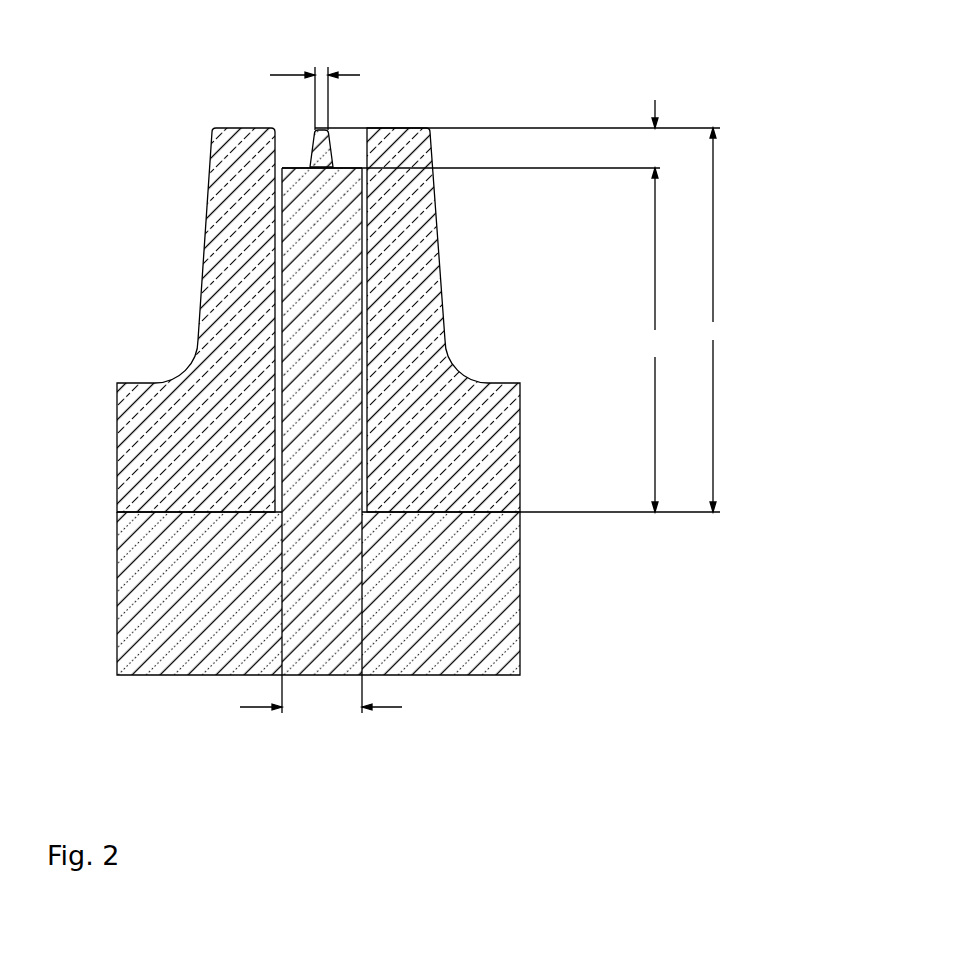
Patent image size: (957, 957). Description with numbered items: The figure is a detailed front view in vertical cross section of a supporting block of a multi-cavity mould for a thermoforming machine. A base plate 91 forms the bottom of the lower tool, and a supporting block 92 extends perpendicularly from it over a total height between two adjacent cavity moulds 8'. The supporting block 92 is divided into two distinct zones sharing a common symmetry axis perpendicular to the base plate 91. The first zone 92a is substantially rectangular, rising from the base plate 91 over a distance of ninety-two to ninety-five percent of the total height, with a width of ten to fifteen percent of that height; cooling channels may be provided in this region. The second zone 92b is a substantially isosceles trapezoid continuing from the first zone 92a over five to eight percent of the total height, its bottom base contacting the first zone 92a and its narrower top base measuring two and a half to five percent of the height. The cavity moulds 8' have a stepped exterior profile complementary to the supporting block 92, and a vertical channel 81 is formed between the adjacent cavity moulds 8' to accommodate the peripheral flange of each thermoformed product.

The base plate 91 is at (459, 628).
The supporting block 92 is at (768, 127).
The first zone 92a is at (323, 333).
The second zone 92b is at (323, 153).
The cavity mould 8' is at (340, 320).
The vertical channel 81 is at (288, 152).